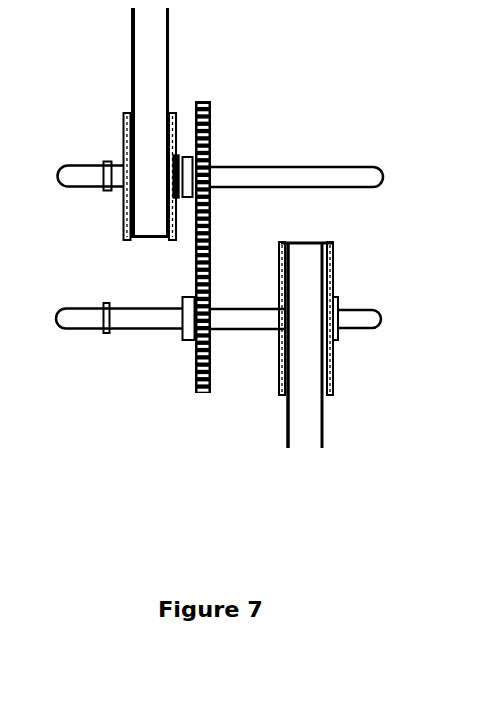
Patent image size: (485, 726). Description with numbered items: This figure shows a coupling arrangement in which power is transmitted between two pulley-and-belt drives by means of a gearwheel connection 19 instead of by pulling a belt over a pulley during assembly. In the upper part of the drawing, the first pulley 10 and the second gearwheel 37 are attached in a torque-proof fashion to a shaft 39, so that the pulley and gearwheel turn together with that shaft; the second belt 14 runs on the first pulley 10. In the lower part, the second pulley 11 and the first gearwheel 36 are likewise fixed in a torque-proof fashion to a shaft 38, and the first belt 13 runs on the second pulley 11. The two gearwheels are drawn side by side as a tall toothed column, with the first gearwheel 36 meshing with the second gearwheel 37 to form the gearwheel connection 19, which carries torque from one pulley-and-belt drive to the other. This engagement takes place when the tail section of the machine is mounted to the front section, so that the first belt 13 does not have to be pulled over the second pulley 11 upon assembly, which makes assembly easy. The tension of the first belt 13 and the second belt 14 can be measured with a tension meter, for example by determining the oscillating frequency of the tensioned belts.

The second belt 14 is at (146, 80).
The first pulley 10 is at (128, 213).
The second gearwheel 37 is at (212, 128).
The shaft 39 is at (293, 178).
The gearwheel connection 19 is at (194, 255).
The first gearwheel 36 is at (193, 358).
The shaft 38 is at (87, 320).
The second pulley 11 is at (327, 278).
The first belt 13 is at (300, 416).